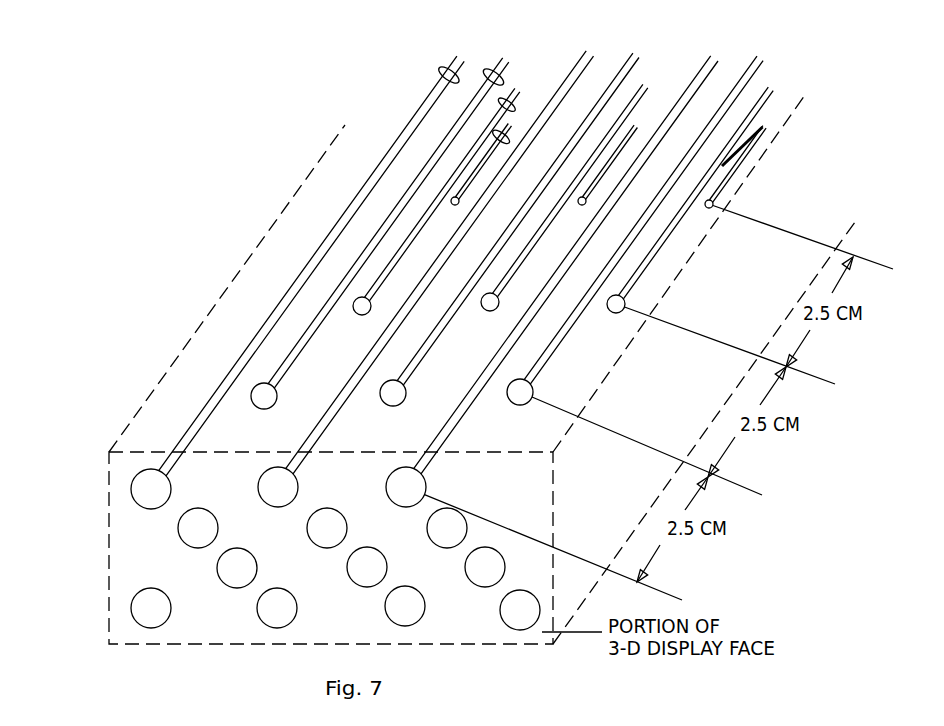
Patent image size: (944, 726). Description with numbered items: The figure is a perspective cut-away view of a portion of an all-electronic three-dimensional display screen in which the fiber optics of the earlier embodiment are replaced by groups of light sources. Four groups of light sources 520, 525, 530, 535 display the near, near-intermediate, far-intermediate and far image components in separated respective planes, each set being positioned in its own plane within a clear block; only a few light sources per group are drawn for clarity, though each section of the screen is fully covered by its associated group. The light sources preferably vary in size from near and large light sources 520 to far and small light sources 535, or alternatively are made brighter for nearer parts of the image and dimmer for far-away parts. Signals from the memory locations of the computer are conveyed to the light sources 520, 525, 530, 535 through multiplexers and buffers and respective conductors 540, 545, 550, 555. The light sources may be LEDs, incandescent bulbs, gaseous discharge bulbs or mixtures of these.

The group of light sources 520 is at (150, 482).
The group of light sources 525 is at (258, 395).
The group of light sources 530 is at (360, 303).
The group of light sources 535 is at (452, 199).
The conductor 540 is at (441, 71).
The conductor 545 is at (487, 69).
The conductor 550 is at (521, 100).
The conductor 555 is at (472, 225).